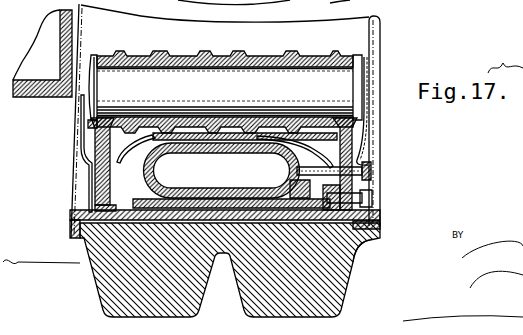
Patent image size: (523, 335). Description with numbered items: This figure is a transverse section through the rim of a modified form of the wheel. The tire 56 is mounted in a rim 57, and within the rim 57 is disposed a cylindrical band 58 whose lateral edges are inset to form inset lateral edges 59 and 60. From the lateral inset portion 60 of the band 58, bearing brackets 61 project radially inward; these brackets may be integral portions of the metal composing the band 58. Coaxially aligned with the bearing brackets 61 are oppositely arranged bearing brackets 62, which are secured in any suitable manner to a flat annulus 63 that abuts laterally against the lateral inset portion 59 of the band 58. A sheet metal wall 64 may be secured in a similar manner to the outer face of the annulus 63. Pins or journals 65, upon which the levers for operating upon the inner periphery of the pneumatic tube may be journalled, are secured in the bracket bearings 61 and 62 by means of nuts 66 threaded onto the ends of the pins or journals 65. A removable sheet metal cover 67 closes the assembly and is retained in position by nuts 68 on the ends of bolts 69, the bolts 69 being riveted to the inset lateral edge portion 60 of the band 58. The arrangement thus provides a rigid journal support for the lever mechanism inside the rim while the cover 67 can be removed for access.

The tire 56 is at (187, 289).
The rim 57 is at (356, 262).
The cylindrical band 58 is at (191, 194).
The inset lateral edge 59 is at (72, 221).
The inset lateral edge 60 is at (381, 226).
The bearing brackets 61 is at (351, 142).
The bearing brackets 62 is at (90, 146).
The flat annulus 63 is at (93, 180).
The sheet metal wall 64 is at (82, 111).
The pins or journals 65 is at (225, 95).
The nuts 66 is at (90, 91).
The removable sheet metal cover 67 is at (374, 32).
The nuts 68 is at (378, 197).
The bolts 69 is at (337, 192).